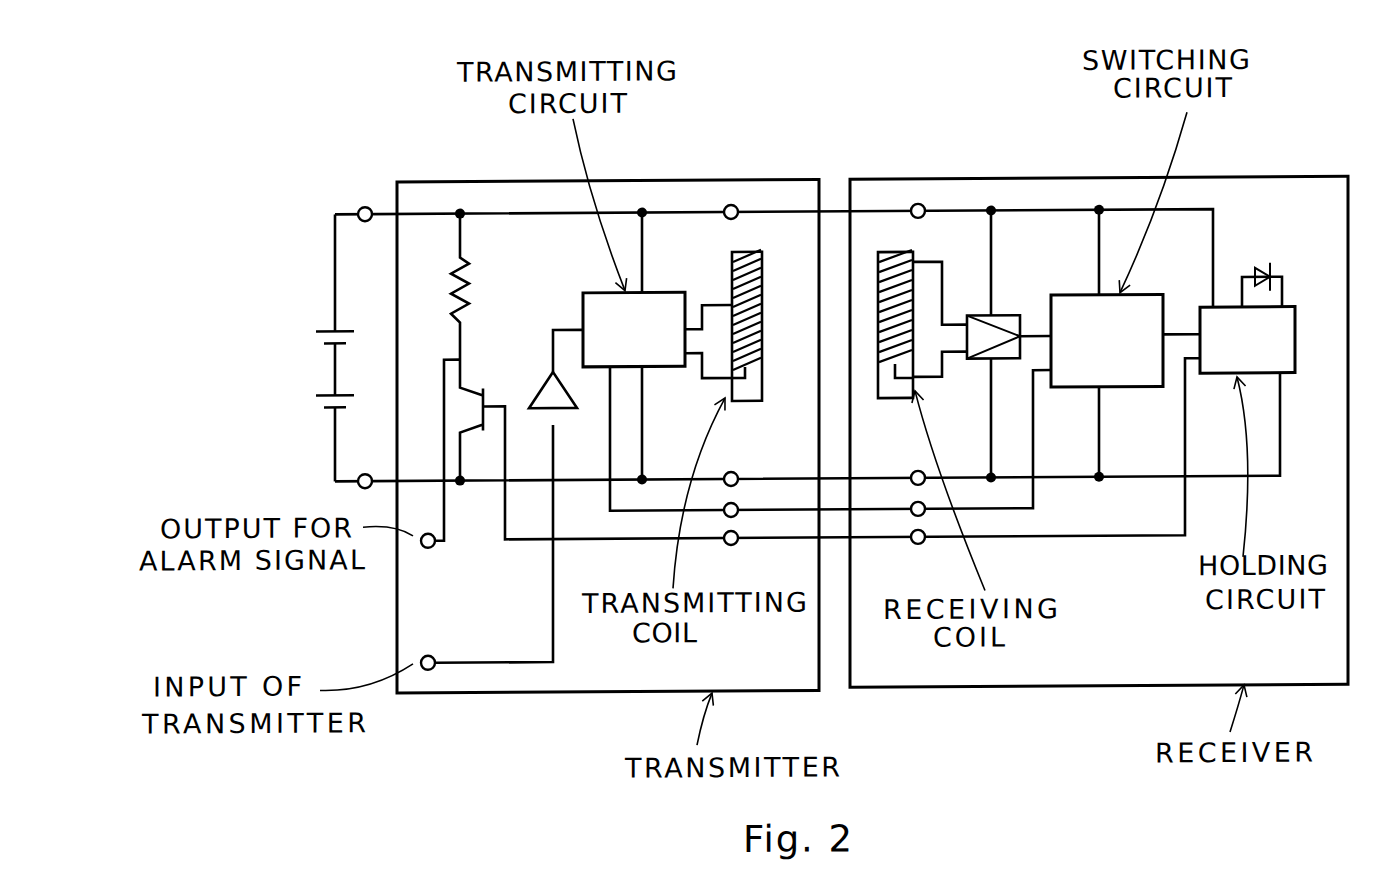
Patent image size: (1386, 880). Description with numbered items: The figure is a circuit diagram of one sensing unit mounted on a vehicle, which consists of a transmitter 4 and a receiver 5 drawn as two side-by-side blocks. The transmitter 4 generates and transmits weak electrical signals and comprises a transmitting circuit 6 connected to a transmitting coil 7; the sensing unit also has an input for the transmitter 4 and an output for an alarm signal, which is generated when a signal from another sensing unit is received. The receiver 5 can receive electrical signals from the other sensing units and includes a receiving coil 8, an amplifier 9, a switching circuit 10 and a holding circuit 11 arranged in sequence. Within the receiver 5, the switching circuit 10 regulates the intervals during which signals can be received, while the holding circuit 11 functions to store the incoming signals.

The transmitter 4 is at (600, 692).
The receiver 5 is at (1058, 688).
The transmitting circuit 6 is at (598, 292).
The transmitting coil 7 is at (738, 260).
The receiving coil 8 is at (900, 258).
The amplifier 9 is at (997, 317).
The switching circuit 10 is at (1145, 298).
The holding circuit 11 is at (1262, 375).